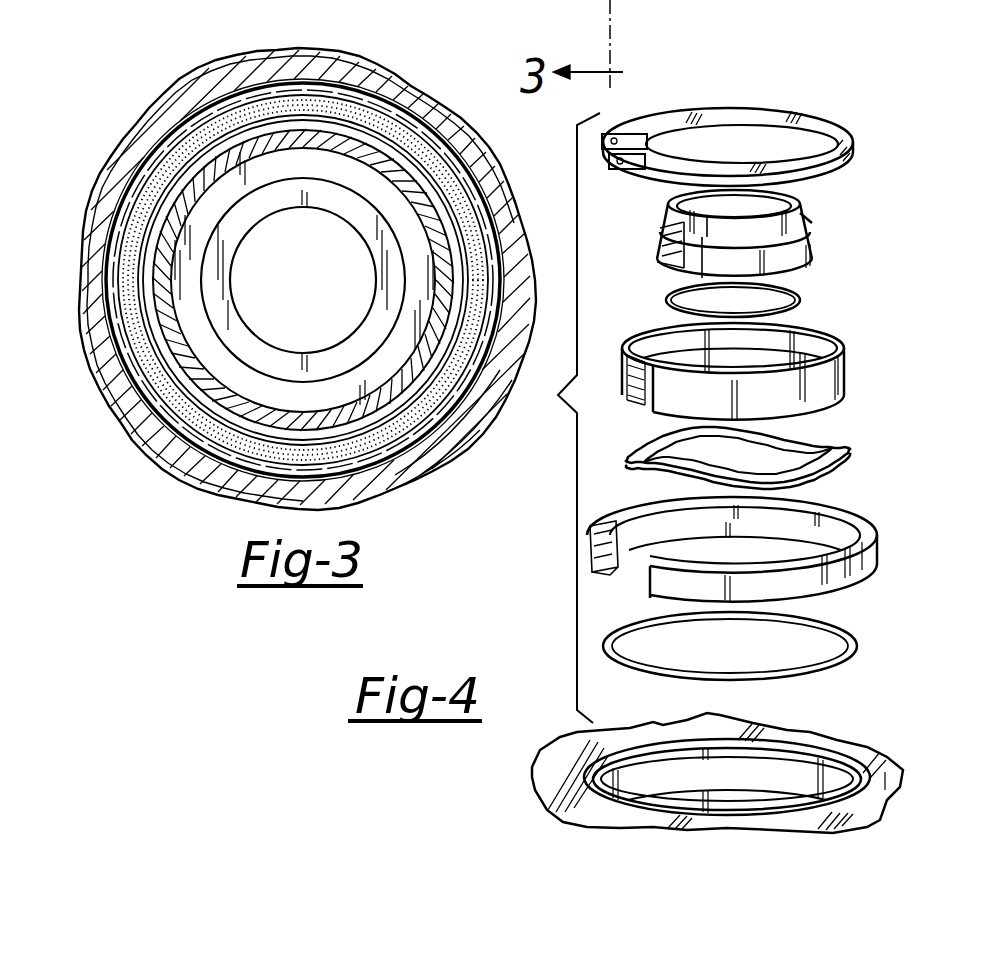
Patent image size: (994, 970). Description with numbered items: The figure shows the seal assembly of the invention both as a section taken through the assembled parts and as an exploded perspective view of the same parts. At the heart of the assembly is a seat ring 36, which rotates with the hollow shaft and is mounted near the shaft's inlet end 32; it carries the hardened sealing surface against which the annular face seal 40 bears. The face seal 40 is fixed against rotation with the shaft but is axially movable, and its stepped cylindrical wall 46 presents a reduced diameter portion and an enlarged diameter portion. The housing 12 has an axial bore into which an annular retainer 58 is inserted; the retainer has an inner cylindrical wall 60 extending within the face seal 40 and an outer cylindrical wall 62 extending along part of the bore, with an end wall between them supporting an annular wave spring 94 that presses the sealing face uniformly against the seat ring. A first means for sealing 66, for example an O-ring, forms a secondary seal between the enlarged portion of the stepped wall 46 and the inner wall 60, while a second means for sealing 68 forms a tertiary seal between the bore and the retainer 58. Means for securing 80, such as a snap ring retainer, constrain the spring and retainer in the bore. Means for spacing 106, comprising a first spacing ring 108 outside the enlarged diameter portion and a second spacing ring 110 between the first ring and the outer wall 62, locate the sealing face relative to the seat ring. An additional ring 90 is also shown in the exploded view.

In FIG. 3, the housing 12 is at (155, 445).
In FIG. 3, the inlet end 32 is at (362, 210).
In FIG. 3, the seat ring 36 is at (325, 158).
In FIG. 3, the annular face seal 40 is at (223, 130).
In FIG. 4, the stepped cylindrical wall 46 is at (800, 223).
In FIG. 4, the annular retainer 58 is at (863, 523).
In FIG. 3, the inner cylindrical wall 60 is at (262, 137).
In FIG. 3, the outer cylindrical wall 62 is at (373, 467).
In FIG. 4, the first means for sealing 66 is at (793, 293).
In FIG. 4, the second means for sealing 68 is at (743, 797).
In FIG. 4, the means for securing 80 is at (767, 112).
In FIG. 4, the O-ring 90 is at (750, 622).
In FIG. 4, the annular wave spring 94 is at (820, 438).
In FIG. 4, the means for spacing 106 is at (845, 363).
In FIG. 3, the first spacing ring 108 is at (207, 457).
In FIG. 3, the second spacing ring 110 is at (247, 460).
In FIG. 4, the second spacing ring 110 is at (803, 740).